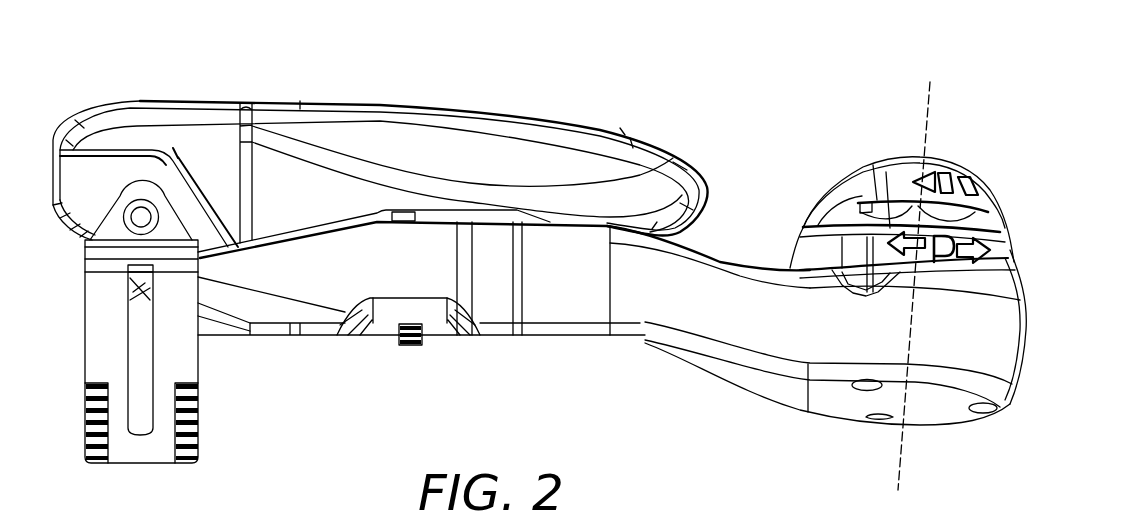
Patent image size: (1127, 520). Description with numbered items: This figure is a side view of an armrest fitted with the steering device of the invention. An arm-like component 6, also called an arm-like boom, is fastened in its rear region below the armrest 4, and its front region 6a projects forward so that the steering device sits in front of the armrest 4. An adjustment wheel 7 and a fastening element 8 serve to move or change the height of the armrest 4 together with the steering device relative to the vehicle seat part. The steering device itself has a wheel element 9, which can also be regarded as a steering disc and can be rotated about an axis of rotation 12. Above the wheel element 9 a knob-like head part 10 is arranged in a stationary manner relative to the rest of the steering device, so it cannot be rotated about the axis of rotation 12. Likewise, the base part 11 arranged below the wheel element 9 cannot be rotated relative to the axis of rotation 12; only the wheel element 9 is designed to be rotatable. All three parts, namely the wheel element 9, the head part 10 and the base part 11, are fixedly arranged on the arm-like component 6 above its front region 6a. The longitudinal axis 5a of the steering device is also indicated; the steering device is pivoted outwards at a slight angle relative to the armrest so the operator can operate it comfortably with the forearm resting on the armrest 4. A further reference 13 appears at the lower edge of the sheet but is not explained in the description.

The armrest 4 is at (480, 150).
The arm-like component 6 is at (317, 280).
The front region 6a is at (962, 338).
The adjustment wheel 7 is at (408, 348).
The fastening element 8 is at (189, 358).
The wheel element 9 is at (1000, 226).
The knob-like head part 10 is at (893, 182).
The base part 11 is at (1002, 273).
The axis of rotation 12 is at (932, 84).
The base 13 is at (947, 517).
The longitudinal axis of the steering device 5a is at (1071, 505).